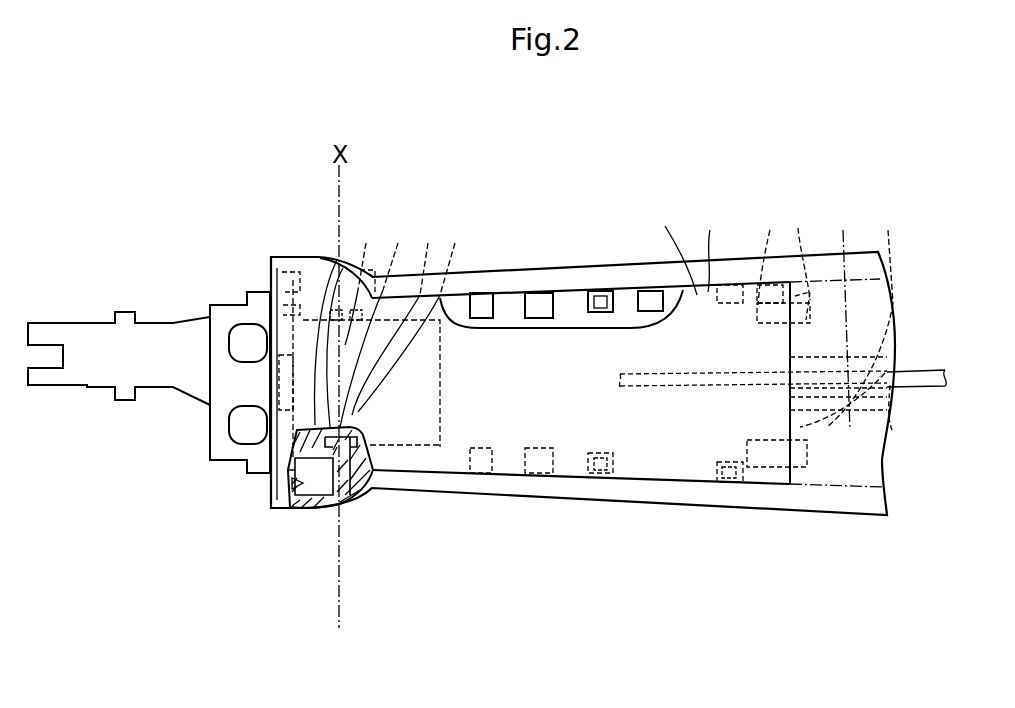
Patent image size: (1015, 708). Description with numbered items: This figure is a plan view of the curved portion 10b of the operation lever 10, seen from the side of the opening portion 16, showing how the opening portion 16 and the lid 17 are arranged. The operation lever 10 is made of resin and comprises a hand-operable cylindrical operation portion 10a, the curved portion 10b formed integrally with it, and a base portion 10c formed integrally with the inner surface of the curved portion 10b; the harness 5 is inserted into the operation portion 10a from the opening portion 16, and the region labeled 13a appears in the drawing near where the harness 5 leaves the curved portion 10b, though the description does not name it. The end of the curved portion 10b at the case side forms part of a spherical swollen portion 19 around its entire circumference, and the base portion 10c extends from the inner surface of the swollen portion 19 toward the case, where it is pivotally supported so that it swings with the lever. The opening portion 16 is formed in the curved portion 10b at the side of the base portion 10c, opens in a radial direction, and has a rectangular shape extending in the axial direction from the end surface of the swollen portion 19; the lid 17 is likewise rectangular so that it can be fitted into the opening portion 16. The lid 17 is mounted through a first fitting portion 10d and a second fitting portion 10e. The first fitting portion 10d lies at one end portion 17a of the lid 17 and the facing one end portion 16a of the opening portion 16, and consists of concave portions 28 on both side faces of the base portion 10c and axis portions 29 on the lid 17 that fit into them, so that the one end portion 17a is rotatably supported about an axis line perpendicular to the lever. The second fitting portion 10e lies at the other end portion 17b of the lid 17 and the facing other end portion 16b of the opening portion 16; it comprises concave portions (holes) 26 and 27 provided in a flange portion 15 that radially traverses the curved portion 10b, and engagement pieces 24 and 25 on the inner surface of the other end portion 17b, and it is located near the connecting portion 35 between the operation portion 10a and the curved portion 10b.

The operation lever 10 is at (624, 184).
The operation portion 10a is at (847, 512).
The curved portion 10b is at (547, 270).
The base portion 10c is at (160, 322).
The first fitting portion 10d is at (475, 206).
The second fitting portion 10e is at (908, 203).
The harness 5 is at (948, 372).
The opening 13a is at (932, 459).
The flange portion 15 is at (775, 352).
The opening portion 16 is at (727, 228).
The one end portion of the opening portion 16a is at (272, 488).
The other end portion of the opening portion 16b is at (790, 418).
The lid 17 is at (675, 248).
The one end portion of the lid 17a is at (272, 505).
The other end portion of the lid 17b is at (790, 398).
The swollen portion 19 is at (362, 505).
The engagement piece 24 is at (805, 260).
The engagement piece 25 is at (853, 314).
The concave portion (hole) 26 is at (778, 228).
The concave portion (hole) 27 is at (851, 228).
The concave portion 28 is at (407, 237).
The axis portion 29 is at (391, 313).
The connecting portion 35 is at (802, 477).